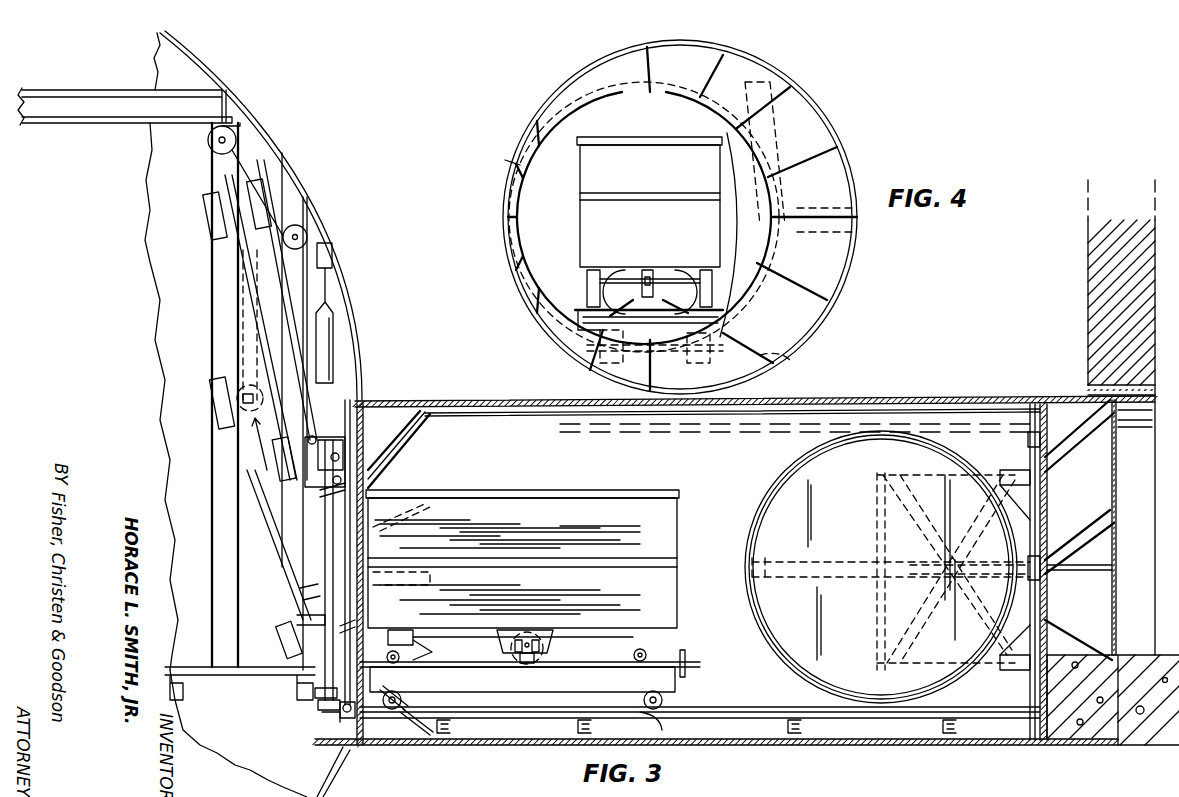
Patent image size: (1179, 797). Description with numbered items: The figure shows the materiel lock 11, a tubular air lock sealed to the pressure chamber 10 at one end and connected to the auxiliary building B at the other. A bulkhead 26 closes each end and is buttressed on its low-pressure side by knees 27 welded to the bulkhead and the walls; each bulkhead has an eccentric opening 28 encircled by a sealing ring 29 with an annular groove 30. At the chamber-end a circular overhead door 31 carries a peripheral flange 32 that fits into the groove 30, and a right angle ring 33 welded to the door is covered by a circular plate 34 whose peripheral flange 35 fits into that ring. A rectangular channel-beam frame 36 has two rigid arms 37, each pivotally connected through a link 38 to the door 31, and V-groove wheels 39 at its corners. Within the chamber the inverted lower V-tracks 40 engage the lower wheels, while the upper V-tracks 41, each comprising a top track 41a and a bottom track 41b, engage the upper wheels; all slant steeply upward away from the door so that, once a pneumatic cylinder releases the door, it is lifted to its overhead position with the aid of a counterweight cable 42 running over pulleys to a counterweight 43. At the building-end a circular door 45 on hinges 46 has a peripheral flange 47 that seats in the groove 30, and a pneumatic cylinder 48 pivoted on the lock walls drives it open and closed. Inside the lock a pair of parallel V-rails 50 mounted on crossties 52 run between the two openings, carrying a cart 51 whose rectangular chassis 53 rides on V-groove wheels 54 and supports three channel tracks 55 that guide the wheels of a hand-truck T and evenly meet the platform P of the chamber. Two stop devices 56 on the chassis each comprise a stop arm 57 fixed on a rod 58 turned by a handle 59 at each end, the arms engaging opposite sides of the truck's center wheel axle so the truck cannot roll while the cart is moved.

In FIG. 3, the pressure chamber 10 is at (283, 150).
In FIG. 3, the materiel lock 11 is at (470, 400).
In FIG. 4, the materiel lock 11 is at (836, 139).
In FIG. 3, the bulkhead 26 is at (1070, 421).
In FIG. 4, the bulkhead 26 is at (797, 118).
In FIG. 3, the knees 27 is at (407, 453).
In FIG. 4, the knees 27 is at (668, 98).
In FIG. 3, the eccentric opening 28 is at (1040, 690).
In FIG. 4, the eccentric opening 28 is at (523, 167).
In FIG. 3, the sealing ring 29 is at (1028, 440).
In FIG. 3, the annular groove 30 is at (330, 748).
In FIG. 3, the overhead door 31 is at (352, 564).
In FIG. 3, the peripheral flange 32 is at (350, 720).
In FIG. 3, the right angle ring 33 is at (330, 716).
In FIG. 3, the circular plate 34 is at (322, 710).
In FIG. 3, the peripheral flange 35 is at (316, 693).
In FIG. 3, the channel-beam frame 36 is at (312, 592).
In FIG. 3, the rigid arms 37 is at (352, 605).
In FIG. 3, the link 38 is at (322, 495).
In FIG. 3, the V-groove wheels 39 is at (290, 645).
In FIG. 3, the lower V-tracks 40 is at (282, 565).
In FIG. 3, the upper V-tracks 41 is at (289, 328).
In FIG. 3, the top track 41a is at (276, 296).
In FIG. 3, the bottom track 41b is at (232, 266).
In FIG. 3, the counterweight cable 42 is at (305, 413).
In FIG. 3, the counterweight 43 is at (334, 353).
In FIG. 3, the circular door 45 is at (852, 611).
In FIG. 4, the circular door 45 is at (777, 266).
In FIG. 3, the hinges 46 is at (990, 672).
In FIG. 3, the peripheral flange 47 is at (781, 658).
In FIG. 3, the pneumatic cylinder 48 is at (841, 562).
In FIG. 4, the pneumatic cylinder 48 is at (828, 232).
In FIG. 3, the V-rails 50 is at (531, 716).
In FIG. 4, the V-rails 50 is at (750, 388).
In FIG. 4, the cart 51 is at (705, 313).
In FIG. 3, the crossties 52 is at (478, 728).
In FIG. 4, the crossties 52 is at (770, 362).
In FIG. 3, the rectangular chassis 53 is at (535, 692).
In FIG. 4, the rectangular chassis 53 is at (570, 335).
In FIG. 3, the V-groove wheels 54 is at (672, 728).
In FIG. 4, the V-groove wheels 54 is at (600, 358).
In FIG. 3, the channel tracks 55 is at (603, 667).
In FIG. 4, the channel tracks 55 is at (737, 272).
In FIG. 3, the stop devices 56 is at (685, 674).
In FIG. 3, the stop arm 57 is at (505, 660).
In FIG. 4, the stop arm 57 is at (649, 280).
In FIG. 3, the rod 58 is at (455, 668).
In FIG. 3, the handle 59 is at (412, 686).
In FIG. 4, the handle 59 is at (665, 318).
In FIG. 3, the hand-truck T is at (506, 497).
In FIG. 4, the hand-truck T is at (583, 213).
In FIG. 3, the auxiliary building B is at (1088, 310).
In FIG. 3, the platform P is at (242, 686).